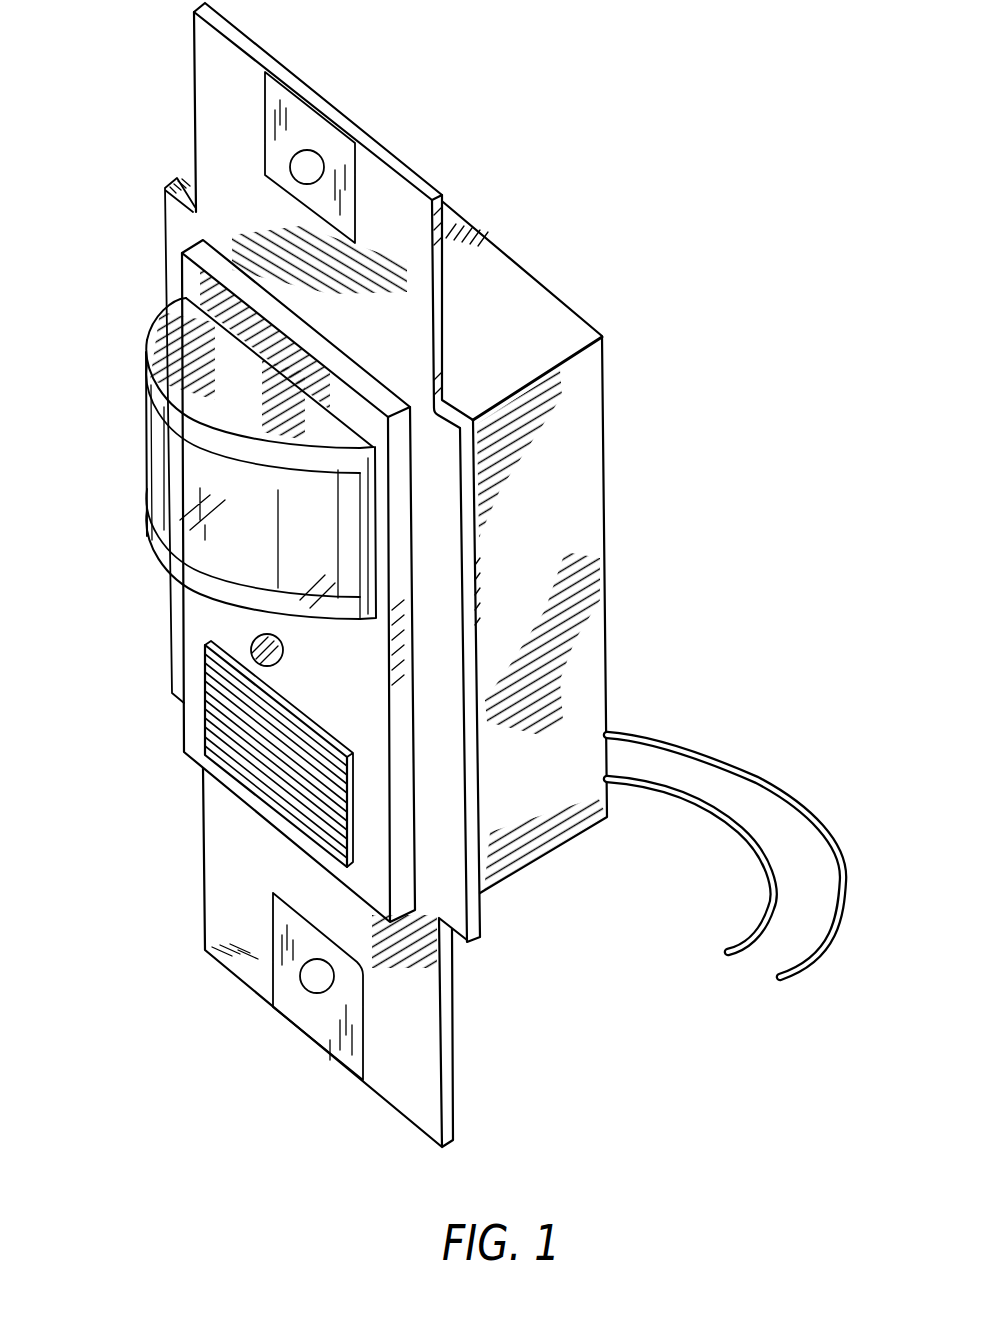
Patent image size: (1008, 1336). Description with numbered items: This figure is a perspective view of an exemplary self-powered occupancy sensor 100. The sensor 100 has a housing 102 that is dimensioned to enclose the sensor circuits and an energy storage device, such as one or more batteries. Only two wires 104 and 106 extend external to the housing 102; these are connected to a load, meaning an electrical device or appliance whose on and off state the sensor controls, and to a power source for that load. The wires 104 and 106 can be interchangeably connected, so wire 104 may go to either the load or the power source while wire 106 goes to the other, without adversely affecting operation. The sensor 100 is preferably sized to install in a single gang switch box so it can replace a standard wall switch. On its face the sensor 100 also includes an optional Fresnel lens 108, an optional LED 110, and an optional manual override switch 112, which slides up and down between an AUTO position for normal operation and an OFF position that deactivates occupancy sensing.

The sensor 100 is at (698, 127).
The housing 102 is at (607, 388).
The wire 104 is at (763, 890).
The wire 106 is at (832, 937).
The Fresnel lens 108 is at (177, 481).
The LED 110 is at (250, 640).
The manual override switch 112 is at (205, 710).